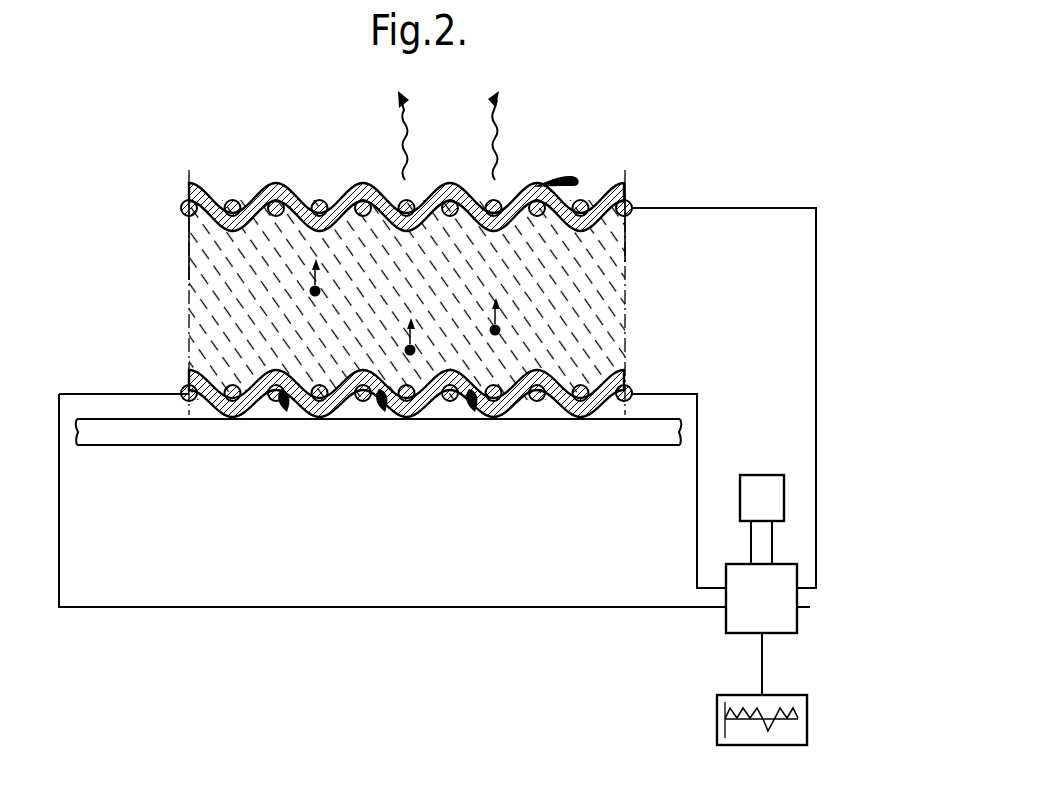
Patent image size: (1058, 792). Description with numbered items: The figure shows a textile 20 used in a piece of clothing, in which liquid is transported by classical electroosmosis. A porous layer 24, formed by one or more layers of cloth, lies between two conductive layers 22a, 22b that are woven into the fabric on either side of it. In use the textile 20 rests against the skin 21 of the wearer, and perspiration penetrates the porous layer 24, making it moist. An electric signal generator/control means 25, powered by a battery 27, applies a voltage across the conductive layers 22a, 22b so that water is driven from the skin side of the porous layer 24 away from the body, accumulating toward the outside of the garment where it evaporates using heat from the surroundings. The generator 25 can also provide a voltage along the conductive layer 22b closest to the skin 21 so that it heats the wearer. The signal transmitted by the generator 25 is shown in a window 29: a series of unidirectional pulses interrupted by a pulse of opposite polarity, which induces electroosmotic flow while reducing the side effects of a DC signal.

The textile 20 is at (390, 285).
The skin 21 is at (149, 436).
The conductive layer 22a is at (581, 198).
The conductive layer 22b is at (537, 399).
The porous layer 24 is at (625, 271).
The electric signal generator/control means 25 is at (776, 610).
The battery 27 is at (776, 511).
The window 29 is at (807, 701).